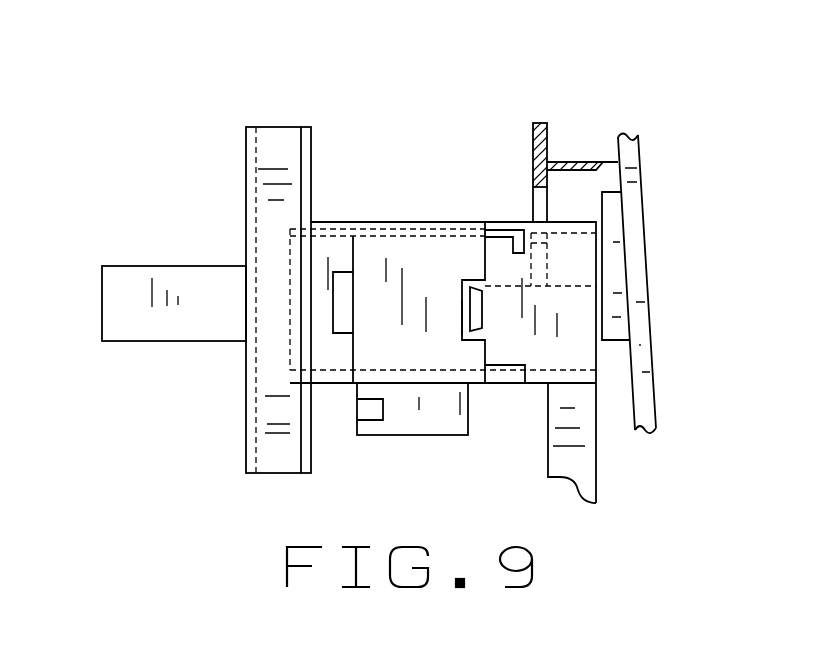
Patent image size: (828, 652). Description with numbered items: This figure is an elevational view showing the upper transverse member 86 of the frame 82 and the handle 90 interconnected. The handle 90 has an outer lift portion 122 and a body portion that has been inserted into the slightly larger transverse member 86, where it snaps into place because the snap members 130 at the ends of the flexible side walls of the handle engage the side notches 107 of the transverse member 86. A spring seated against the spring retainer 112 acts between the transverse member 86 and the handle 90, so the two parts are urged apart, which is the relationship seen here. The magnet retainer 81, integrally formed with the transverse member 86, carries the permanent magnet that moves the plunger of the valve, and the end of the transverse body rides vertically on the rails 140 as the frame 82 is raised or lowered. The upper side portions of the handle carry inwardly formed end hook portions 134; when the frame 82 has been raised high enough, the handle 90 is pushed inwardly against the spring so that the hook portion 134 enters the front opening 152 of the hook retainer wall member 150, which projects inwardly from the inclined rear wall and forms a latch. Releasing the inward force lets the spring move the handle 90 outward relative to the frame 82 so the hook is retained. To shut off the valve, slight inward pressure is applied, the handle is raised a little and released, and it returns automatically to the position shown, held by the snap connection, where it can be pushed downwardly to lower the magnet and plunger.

The handle 90 is at (157, 240).
The frame 82 is at (432, 170).
The upper transverse member 86 is at (327, 222).
The spring retainer 112 is at (342, 272).
The notch 107 is at (477, 280).
The snap member 130 is at (462, 308).
The end hook portion 134 is at (514, 254).
The rails 140 is at (617, 343).
The hook retainer wall member 150 is at (580, 160).
The front opening 152 is at (533, 207).
The lift portion 122 is at (178, 341).
The magnet retainer 81 is at (375, 435).